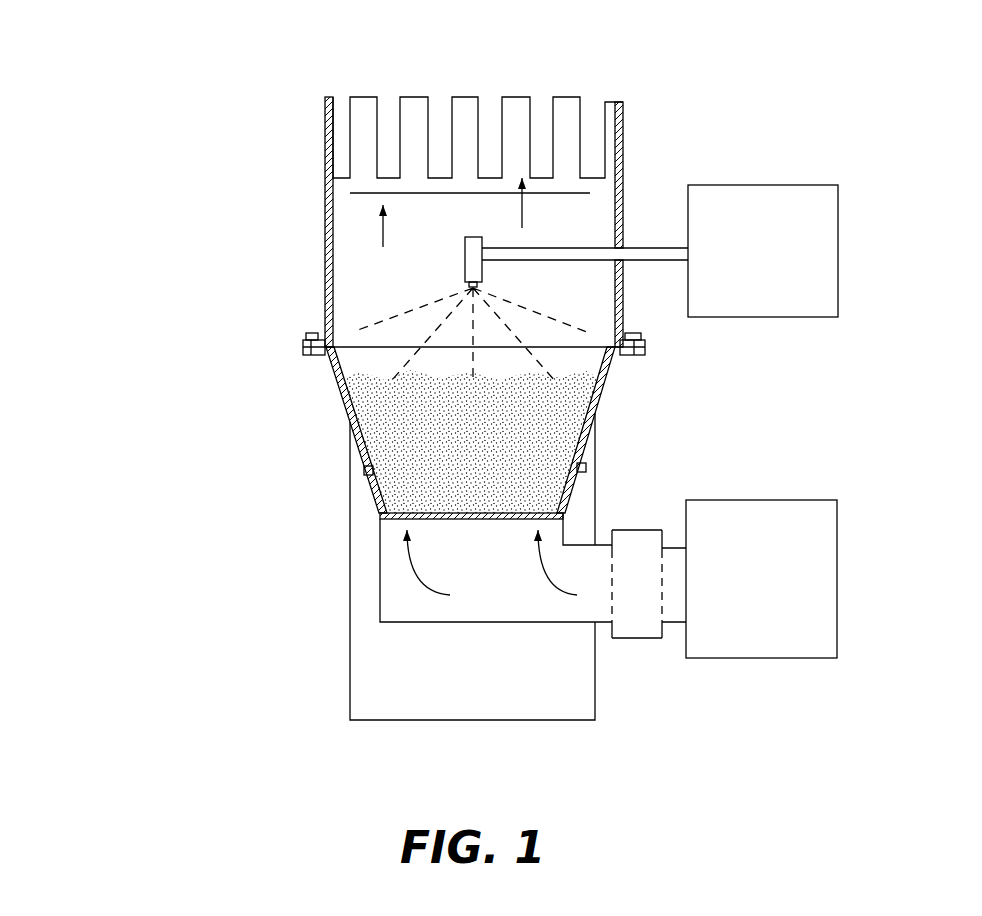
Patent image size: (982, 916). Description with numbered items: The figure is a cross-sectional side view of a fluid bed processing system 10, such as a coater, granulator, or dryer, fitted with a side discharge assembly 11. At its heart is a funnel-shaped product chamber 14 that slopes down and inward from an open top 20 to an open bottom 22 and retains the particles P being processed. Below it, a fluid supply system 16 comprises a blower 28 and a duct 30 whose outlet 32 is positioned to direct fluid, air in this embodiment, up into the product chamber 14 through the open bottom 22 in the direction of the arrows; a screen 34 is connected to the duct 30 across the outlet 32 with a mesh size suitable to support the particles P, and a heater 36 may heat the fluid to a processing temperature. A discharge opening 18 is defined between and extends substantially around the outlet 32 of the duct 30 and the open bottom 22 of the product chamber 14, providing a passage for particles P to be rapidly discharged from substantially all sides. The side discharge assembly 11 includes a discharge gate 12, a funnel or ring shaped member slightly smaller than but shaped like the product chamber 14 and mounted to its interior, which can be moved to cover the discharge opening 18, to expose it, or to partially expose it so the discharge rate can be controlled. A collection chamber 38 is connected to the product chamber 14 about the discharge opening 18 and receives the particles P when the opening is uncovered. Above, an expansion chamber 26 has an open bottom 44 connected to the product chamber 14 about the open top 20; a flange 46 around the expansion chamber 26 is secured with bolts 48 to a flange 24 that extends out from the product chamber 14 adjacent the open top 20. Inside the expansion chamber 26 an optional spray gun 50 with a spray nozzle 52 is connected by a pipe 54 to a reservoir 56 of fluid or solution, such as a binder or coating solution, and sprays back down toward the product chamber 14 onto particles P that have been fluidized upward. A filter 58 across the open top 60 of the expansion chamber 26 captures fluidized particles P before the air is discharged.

The fluid bed processing system 10 is at (157, 387).
The side discharge assembly 11 is at (368, 489).
The discharge gate 12 is at (366, 470).
The product chamber 14 is at (344, 393).
The fluid supply system 16 is at (655, 660).
The discharge opening 18 is at (370, 504).
The open top 20 is at (383, 340).
The open bottom 22 is at (457, 528).
The flange 24 is at (322, 355).
The expansion chamber 26 is at (598, 207).
The blower 28 is at (797, 572).
The duct 30 is at (600, 543).
The outlet 32 is at (500, 520).
The screen 34 is at (385, 517).
The heater 36 is at (637, 620).
The collection chamber 38 is at (370, 677).
The open bottom 44 is at (567, 340).
The flange 46 is at (303, 344).
The bolts 48 is at (312, 333).
The spray gun 50 is at (465, 243).
The spray nozzle 52 is at (468, 283).
The pipe 54 is at (648, 246).
The reservoir 56 is at (808, 252).
The filter 58 is at (465, 108).
The open top 60 is at (340, 90).
The particles P is at (567, 410).